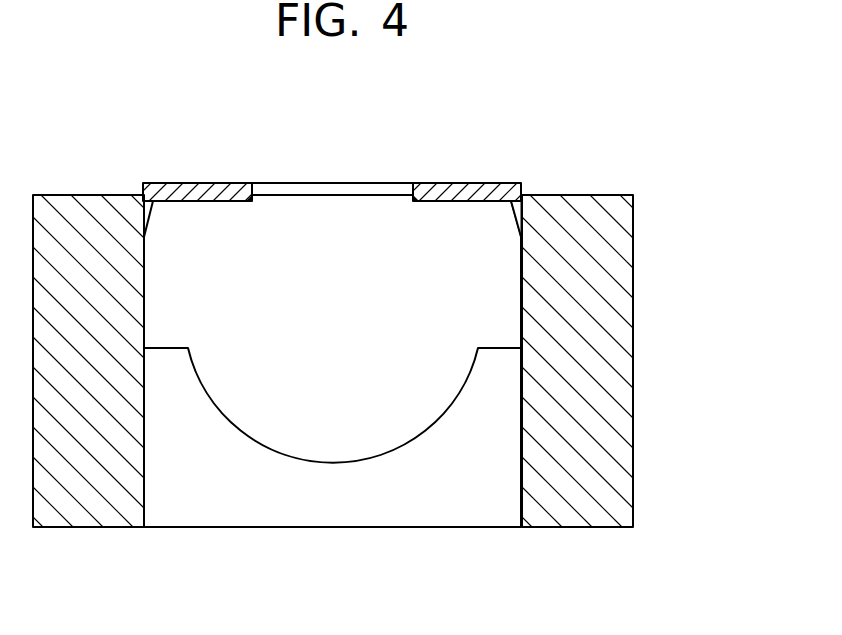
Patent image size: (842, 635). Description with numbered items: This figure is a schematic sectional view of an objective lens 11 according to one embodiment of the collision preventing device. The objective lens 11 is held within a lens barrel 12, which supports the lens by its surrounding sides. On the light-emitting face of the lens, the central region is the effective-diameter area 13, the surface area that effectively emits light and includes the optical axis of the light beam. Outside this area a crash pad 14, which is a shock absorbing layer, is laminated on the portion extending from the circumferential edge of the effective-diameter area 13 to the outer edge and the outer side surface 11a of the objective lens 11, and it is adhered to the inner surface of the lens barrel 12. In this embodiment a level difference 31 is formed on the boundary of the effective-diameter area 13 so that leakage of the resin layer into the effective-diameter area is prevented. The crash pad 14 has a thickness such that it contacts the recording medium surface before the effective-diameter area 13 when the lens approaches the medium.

The objective lens 11 is at (476, 247).
The outer side surface 11a is at (522, 211).
The lens barrel 12 is at (93, 505).
The effective-diameter area 13 is at (328, 176).
The crash pad 14 is at (462, 188).
The level difference 31 is at (261, 180).